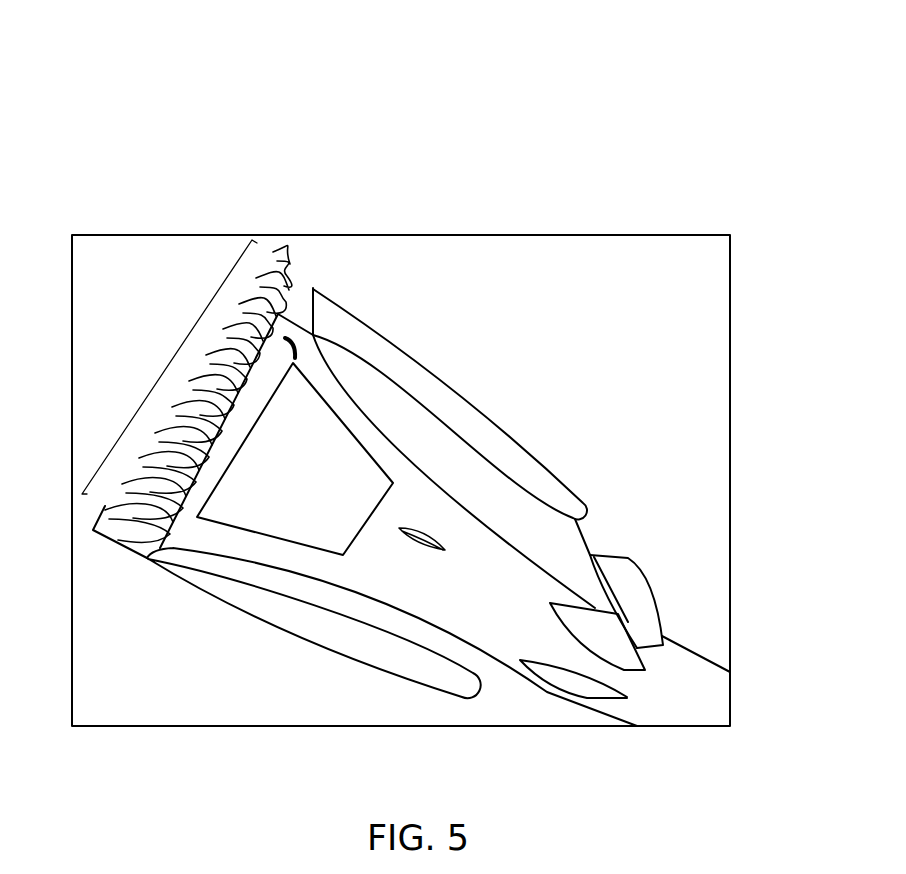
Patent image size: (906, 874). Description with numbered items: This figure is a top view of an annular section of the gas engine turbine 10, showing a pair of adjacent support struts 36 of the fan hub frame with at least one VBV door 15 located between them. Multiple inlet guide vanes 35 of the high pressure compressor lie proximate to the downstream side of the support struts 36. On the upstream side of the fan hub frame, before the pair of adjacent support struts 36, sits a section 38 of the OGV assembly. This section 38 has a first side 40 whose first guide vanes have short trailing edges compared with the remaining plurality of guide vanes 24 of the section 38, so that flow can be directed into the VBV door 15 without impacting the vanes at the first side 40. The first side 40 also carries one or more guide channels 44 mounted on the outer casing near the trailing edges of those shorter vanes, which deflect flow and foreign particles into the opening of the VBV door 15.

The gas engine turbine 10 is at (697, 80).
The VBV door 15 is at (316, 491).
The guide vanes 24 is at (130, 527).
The inlet guide vanes 35 is at (617, 562).
The support struts 36 is at (508, 445).
The section of the OGV assembly 38 is at (168, 366).
The first side 40 is at (268, 238).
The guide channels 44 is at (300, 342).